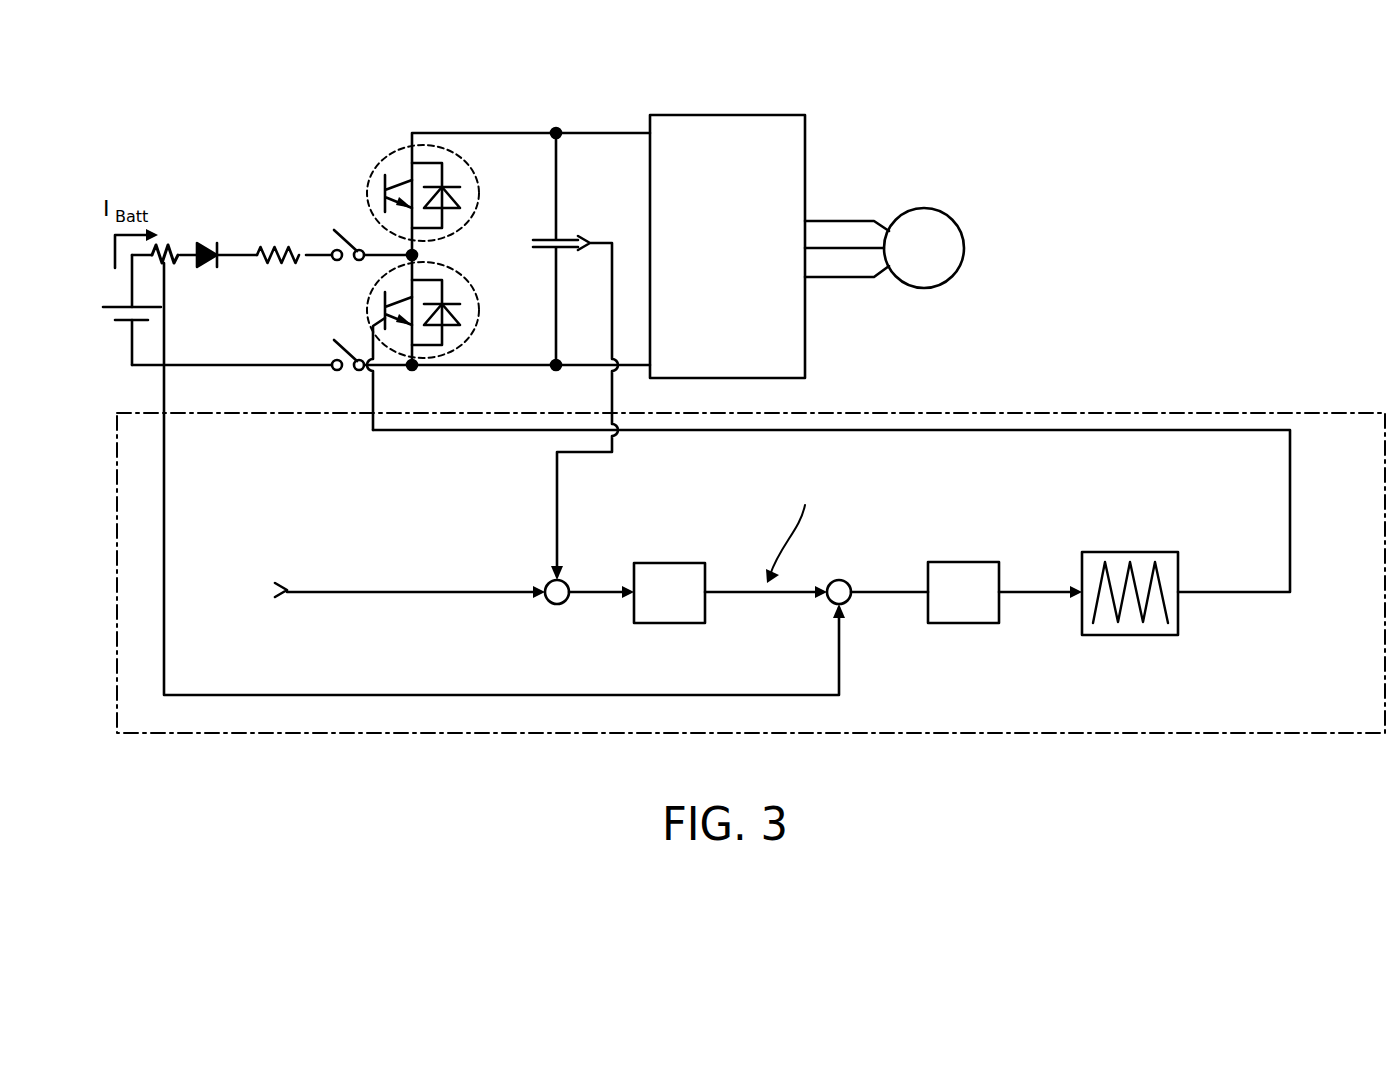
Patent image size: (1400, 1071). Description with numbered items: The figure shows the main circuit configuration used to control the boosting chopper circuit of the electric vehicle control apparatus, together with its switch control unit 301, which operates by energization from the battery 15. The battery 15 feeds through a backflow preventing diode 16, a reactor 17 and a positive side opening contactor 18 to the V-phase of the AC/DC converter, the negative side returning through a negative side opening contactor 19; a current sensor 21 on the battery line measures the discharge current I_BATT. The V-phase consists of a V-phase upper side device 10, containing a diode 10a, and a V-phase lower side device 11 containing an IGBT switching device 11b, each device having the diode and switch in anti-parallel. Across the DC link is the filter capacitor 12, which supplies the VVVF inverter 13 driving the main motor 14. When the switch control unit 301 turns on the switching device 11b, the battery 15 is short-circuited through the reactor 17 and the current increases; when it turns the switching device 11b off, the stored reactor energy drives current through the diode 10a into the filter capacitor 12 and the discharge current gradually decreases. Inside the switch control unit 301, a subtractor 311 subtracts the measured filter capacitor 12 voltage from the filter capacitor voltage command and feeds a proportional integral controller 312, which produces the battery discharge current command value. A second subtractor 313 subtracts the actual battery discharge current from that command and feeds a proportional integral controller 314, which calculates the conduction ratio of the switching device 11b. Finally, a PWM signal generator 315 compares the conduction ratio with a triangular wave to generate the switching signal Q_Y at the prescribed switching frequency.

The V-phase upper side device 10 is at (445, 188).
The diode 10a is at (457, 193).
The V-phase lower side device 11 is at (475, 287).
The switching device 11b is at (391, 322).
The filter capacitor 12 is at (562, 236).
The VVVF inverter 13 is at (766, 115).
The main motor 14 is at (925, 208).
The battery 15 is at (114, 317).
The backflow preventing diode 16 is at (203, 238).
The reactor 17 is at (276, 238).
The positive side opening contactor 18 is at (333, 234).
The negative side opening contactor 19 is at (333, 355).
The battery current sensor 21 is at (170, 274).
The switch control unit 301 is at (1331, 408).
The subtractor 311 is at (559, 613).
The proportional integral controller 312 is at (674, 562).
The subtractor 313 is at (841, 579).
The proportional integral controller 314 is at (964, 560).
The PWM signal generator 315 is at (1133, 636).